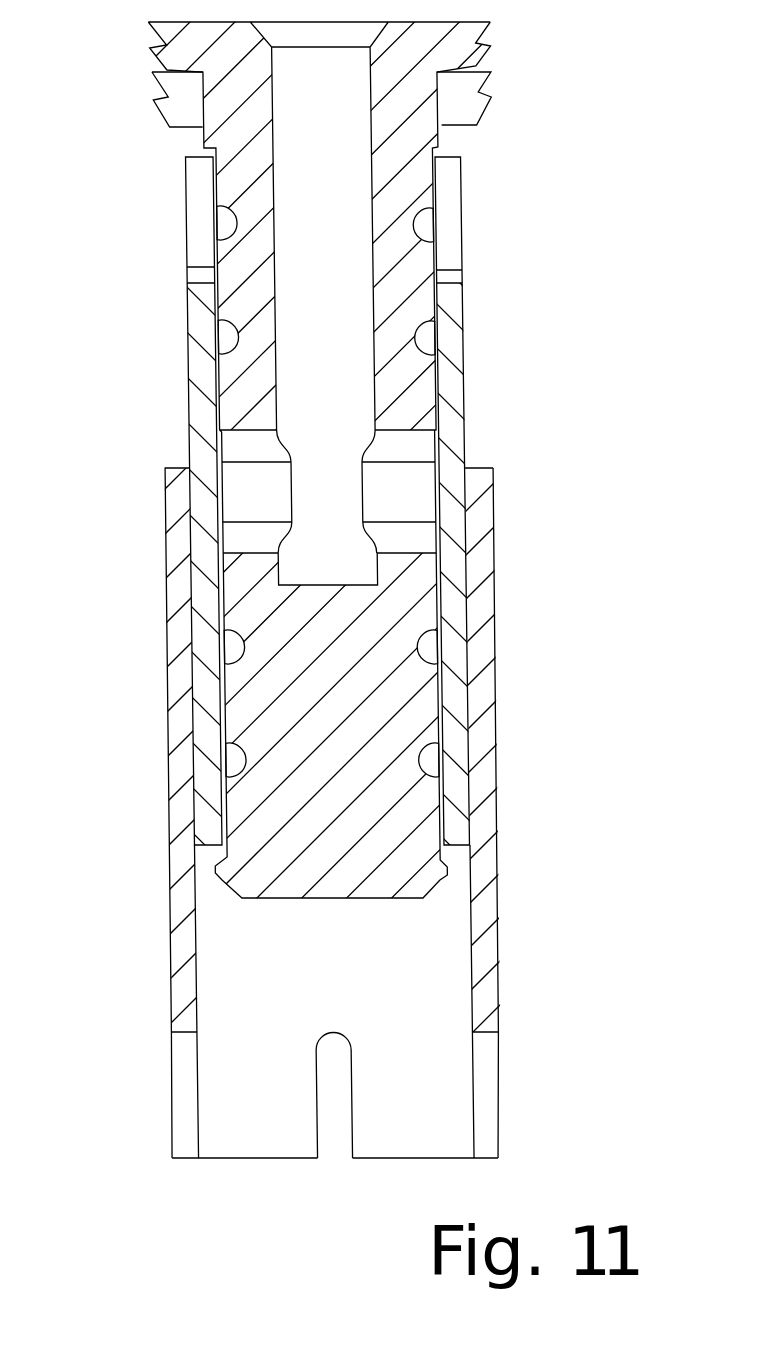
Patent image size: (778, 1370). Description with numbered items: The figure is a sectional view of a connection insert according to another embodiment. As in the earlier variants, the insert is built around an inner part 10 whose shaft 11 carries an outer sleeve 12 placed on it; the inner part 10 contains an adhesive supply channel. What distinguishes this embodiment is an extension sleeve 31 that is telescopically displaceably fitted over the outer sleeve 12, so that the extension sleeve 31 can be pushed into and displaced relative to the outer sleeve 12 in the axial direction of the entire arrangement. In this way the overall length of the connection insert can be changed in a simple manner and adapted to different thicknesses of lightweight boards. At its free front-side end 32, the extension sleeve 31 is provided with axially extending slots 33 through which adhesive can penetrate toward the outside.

The inner part 10 is at (437, 145).
The shaft 11 is at (240, 263).
The outer sleeve 12 is at (200, 408).
The extension sleeve 31 is at (480, 787).
The free front-side end 32 is at (253, 1160).
The axially extending slots 33 is at (183, 1077).